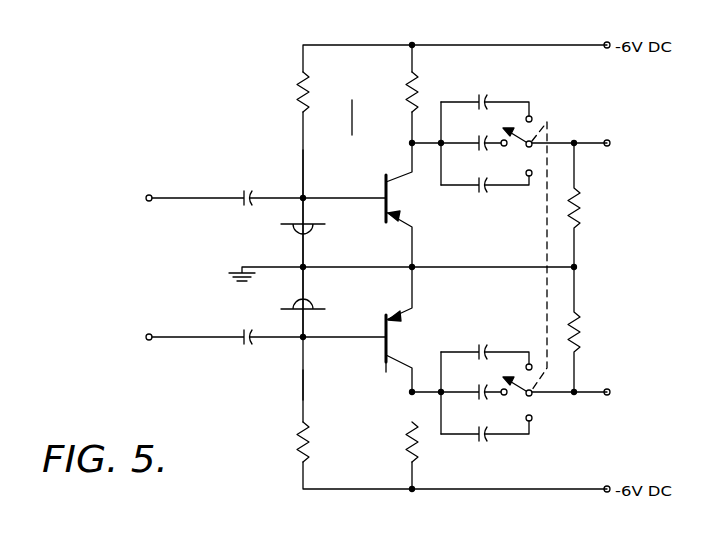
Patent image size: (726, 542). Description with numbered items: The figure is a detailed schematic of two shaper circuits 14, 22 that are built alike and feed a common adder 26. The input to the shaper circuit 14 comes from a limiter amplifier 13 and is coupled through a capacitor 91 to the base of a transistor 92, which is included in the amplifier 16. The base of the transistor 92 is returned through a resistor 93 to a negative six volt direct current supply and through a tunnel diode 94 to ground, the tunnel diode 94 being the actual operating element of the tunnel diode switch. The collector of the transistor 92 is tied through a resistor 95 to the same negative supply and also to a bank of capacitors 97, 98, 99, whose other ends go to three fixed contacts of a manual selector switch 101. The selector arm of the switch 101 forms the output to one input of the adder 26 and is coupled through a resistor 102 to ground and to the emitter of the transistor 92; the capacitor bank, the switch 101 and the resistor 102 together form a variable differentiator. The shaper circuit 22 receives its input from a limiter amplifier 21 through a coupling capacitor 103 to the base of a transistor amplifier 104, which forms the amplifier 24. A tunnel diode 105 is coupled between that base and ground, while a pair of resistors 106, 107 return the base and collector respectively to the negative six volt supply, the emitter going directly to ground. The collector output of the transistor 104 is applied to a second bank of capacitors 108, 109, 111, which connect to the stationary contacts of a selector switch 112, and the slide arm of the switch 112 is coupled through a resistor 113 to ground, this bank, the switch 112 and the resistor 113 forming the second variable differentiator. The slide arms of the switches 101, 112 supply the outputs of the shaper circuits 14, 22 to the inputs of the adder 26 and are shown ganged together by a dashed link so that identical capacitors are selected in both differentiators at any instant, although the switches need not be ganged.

The limiter amplifier 13 is at (96, 198).
The limiter amplifier 21 is at (96, 337).
The adder circuit 26 is at (624, 279).
The shaper circuit 14 is at (280, 167).
The amplifier 16 is at (354, 128).
The shaper circuit 22 is at (276, 388).
The transistor amplifier 24 is at (376, 378).
The capacitor 91 is at (247, 190).
The transistor 92 is at (384, 187).
The resistor 93 is at (309, 94).
The tunnel diode 94 is at (291, 229).
The resistor 95 is at (406, 96).
The capacitor 97 is at (478, 94).
The capacitor 98 is at (478, 137).
The capacitor 99 is at (478, 180).
The manual selector switch 101 is at (520, 155).
The resistor 102 is at (580, 212).
The coupling capacitor 103 is at (247, 347).
The transistor amplifier 104 is at (380, 362).
The tunnel diode 105 is at (312, 300).
The resistor 106 is at (308, 446).
The resistor 107 is at (407, 452).
The capacitor 108 is at (480, 344).
The capacitor 109 is at (480, 385).
The capacitor 111 is at (478, 428).
The selector switch 112 is at (520, 403).
The resistor 113 is at (580, 324).